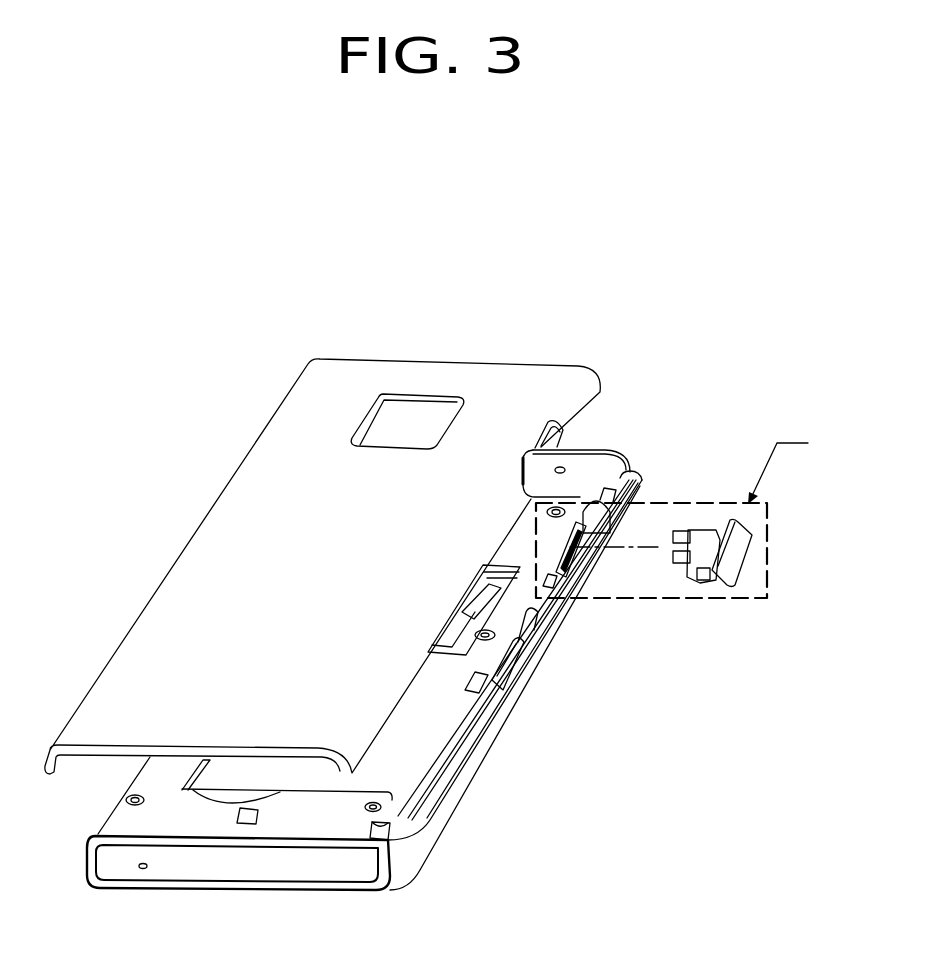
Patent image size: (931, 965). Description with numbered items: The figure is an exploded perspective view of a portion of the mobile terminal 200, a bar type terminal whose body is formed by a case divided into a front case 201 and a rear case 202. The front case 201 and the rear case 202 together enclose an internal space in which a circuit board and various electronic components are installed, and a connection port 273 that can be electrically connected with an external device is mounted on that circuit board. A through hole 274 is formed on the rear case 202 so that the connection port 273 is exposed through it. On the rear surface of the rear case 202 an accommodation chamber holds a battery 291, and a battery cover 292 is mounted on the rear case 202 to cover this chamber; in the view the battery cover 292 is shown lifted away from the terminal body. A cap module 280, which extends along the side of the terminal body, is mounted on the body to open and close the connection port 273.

The mobile terminal 200 is at (172, 377).
The battery cover 292 is at (165, 577).
The battery 291 is at (403, 723).
The front case 201 is at (413, 838).
The rear case 202 is at (407, 792).
The connection port 273 is at (598, 536).
The through hole 274 is at (560, 558).
The cap module 280 is at (754, 568).